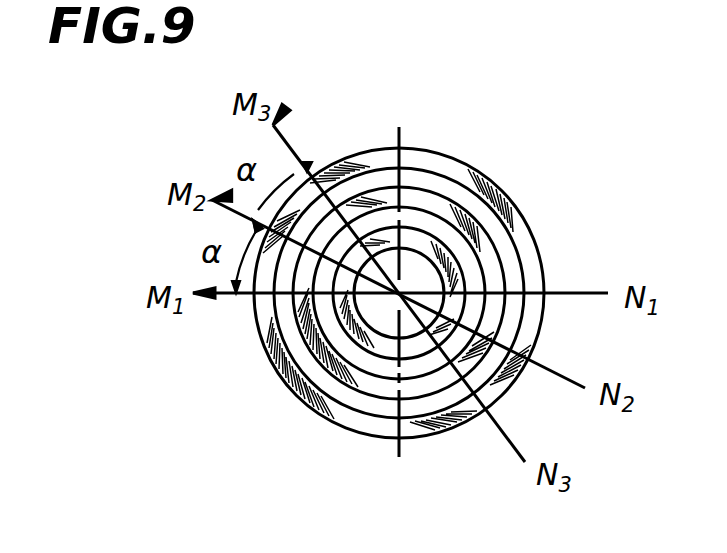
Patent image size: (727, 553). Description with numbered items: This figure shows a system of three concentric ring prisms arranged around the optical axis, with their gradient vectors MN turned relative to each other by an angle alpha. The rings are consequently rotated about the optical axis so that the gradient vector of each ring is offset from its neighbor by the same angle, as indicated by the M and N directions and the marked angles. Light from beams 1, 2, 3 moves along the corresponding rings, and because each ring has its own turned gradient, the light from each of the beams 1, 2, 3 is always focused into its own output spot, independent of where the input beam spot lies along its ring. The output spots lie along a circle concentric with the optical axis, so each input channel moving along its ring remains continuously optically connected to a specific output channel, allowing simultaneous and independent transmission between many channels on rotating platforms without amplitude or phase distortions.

The beam 1 is at (500, 190).
The beam 2 is at (483, 230).
The beam 3 is at (465, 283).